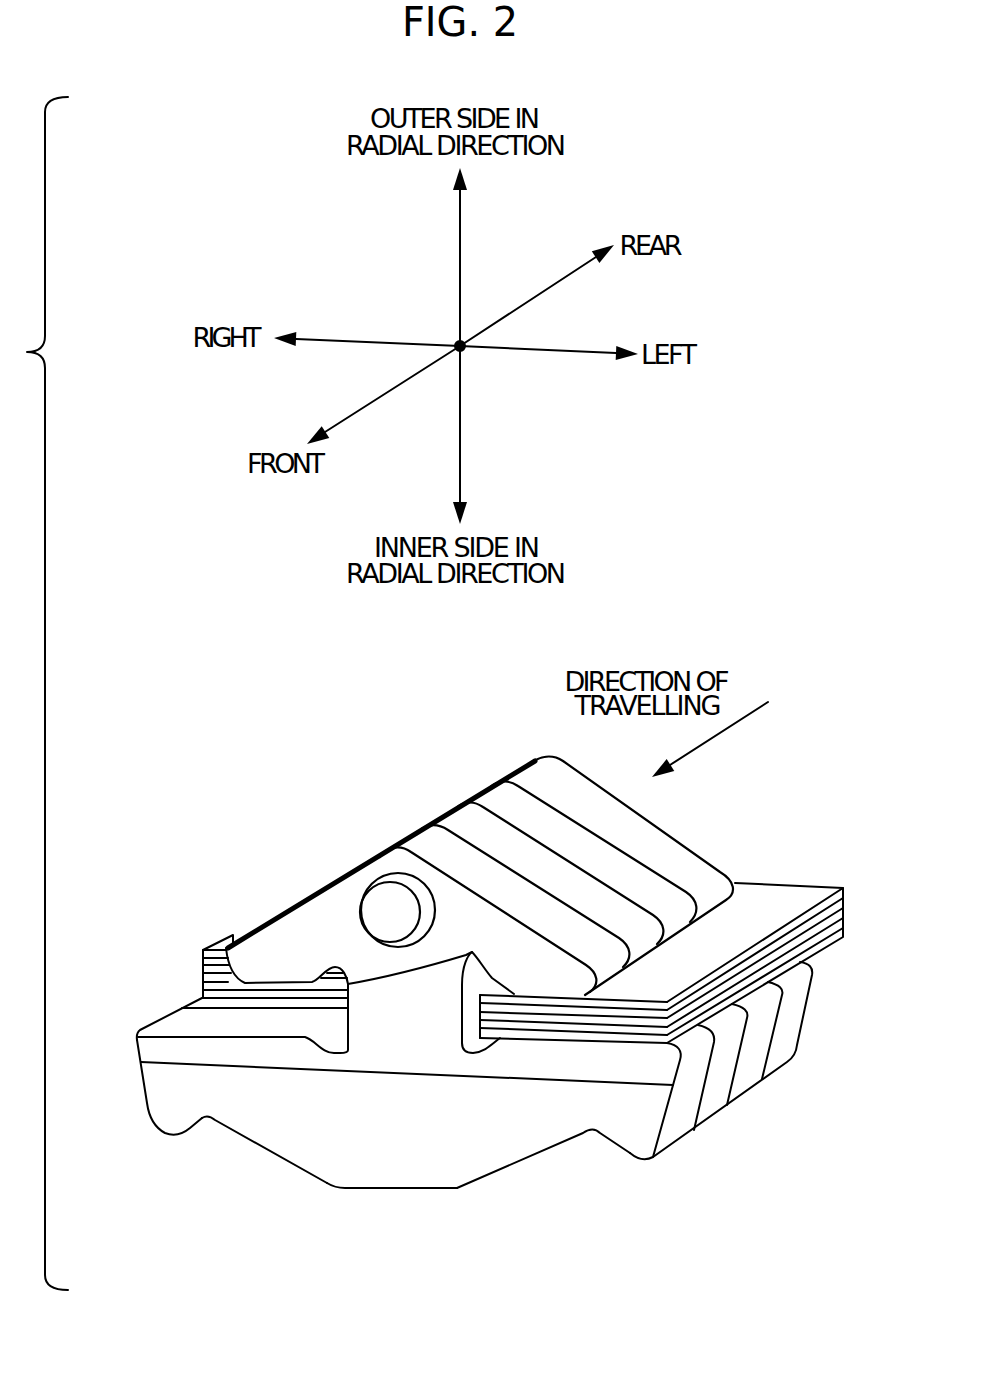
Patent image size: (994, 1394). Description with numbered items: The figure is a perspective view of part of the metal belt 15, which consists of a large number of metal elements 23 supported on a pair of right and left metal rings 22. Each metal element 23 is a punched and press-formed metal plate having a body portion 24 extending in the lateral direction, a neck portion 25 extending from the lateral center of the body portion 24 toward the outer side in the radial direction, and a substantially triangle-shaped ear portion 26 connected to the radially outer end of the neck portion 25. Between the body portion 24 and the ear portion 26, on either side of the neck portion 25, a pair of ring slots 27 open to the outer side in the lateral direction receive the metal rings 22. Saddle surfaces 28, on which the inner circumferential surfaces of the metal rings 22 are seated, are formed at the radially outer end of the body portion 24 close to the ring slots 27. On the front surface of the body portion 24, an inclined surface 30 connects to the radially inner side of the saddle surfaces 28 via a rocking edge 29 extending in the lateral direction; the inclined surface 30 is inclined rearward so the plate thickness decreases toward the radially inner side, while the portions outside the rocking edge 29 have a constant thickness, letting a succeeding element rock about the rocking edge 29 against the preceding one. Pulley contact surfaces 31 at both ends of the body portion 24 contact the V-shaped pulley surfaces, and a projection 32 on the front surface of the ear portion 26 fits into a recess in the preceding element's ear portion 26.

The metal belt 15 is at (444, 768).
The metal rings 22 is at (228, 918).
The metal elements 23 is at (529, 1192).
The body portion 24 is at (256, 1158).
The neck portion 25 is at (412, 1032).
The ear portion 26 is at (330, 913).
The ring slots 27 is at (467, 1012).
The saddle surfaces 28 is at (218, 1020).
The rocking edge 29 is at (530, 1080).
The inclined surface 30 is at (367, 1103).
The pulley contact surfaces 31 is at (145, 1103).
The projection 32 is at (387, 912).